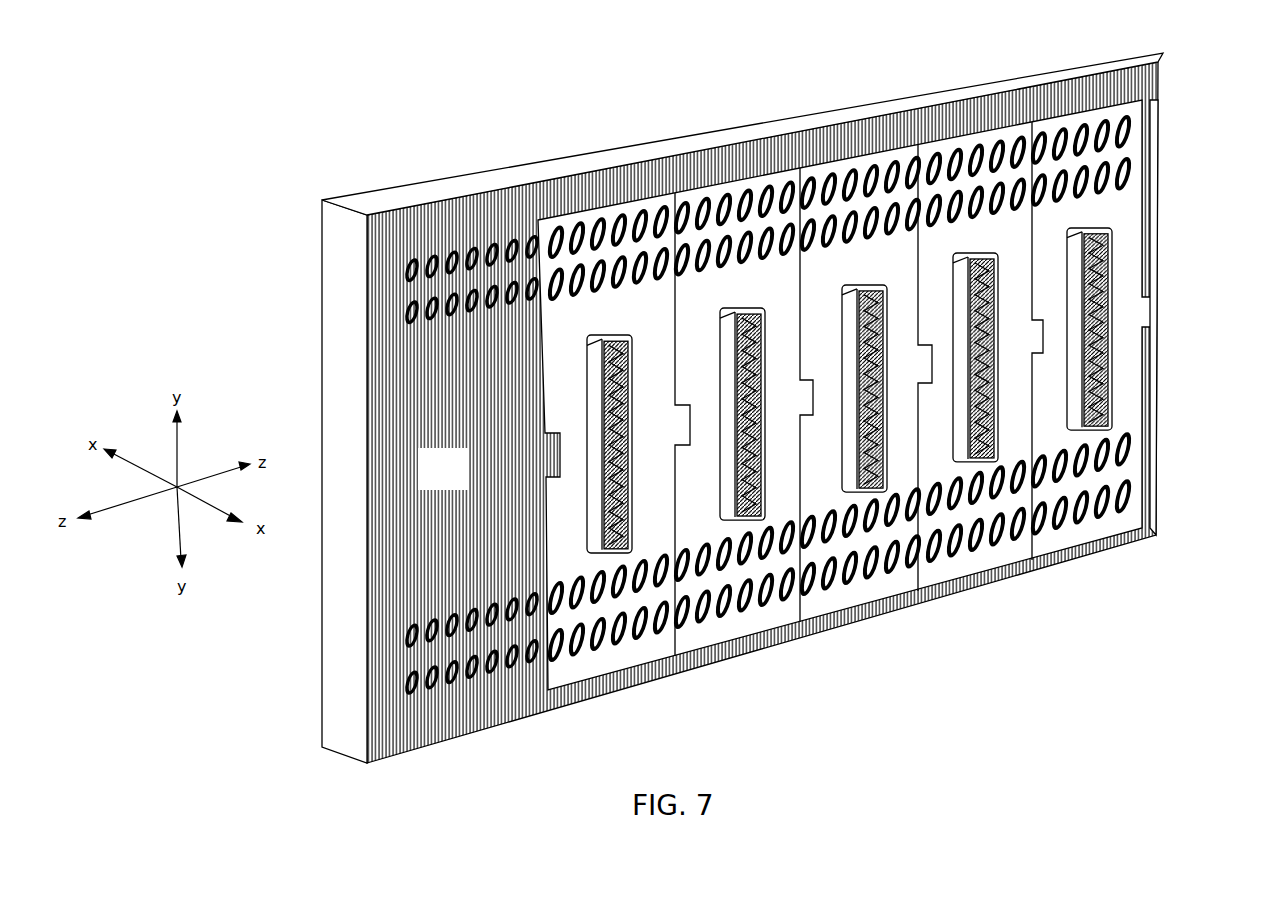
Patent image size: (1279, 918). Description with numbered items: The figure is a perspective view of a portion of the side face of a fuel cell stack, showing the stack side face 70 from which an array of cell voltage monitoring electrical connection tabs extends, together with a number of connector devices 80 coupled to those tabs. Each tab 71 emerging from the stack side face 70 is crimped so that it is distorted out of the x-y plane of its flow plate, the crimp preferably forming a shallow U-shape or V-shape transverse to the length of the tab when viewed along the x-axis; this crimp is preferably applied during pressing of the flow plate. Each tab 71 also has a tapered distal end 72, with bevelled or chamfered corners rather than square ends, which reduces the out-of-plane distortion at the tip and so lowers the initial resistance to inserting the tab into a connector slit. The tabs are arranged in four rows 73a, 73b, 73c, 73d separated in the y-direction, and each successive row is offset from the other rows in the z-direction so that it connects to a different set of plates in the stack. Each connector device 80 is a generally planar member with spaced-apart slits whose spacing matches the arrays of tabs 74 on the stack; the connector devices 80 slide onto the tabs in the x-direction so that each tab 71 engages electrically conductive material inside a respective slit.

The stack side face 70 is at (455, 483).
The tab 71 is at (365, 258).
The tapered distal end 72 is at (458, 196).
The row of tabs 73a is at (1178, 111).
The row of tabs 73b is at (1171, 206).
The row of tabs 73c is at (1176, 451).
The row of tabs 73d is at (1164, 500).
The array of tabs 74 is at (1161, 127).
The connector device 80 is at (668, 515).